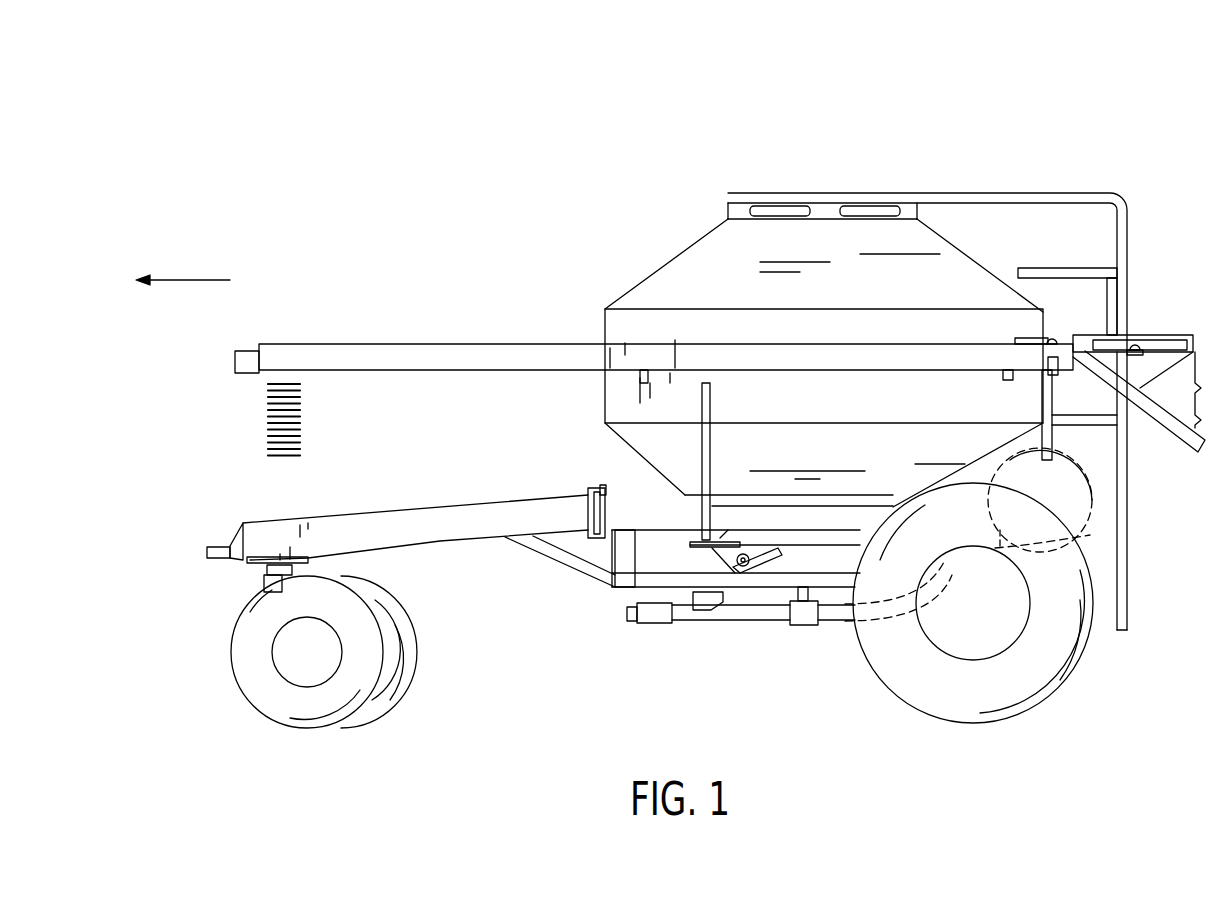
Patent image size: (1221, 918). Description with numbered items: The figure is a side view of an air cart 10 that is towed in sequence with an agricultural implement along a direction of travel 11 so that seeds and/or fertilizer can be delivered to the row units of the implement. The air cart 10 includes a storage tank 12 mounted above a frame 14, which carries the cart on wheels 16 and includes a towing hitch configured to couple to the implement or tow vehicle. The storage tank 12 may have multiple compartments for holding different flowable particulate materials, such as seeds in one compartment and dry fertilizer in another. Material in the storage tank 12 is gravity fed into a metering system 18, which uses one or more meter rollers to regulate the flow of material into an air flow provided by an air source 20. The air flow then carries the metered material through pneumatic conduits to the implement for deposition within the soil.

The air cart 10 is at (668, 150).
The direction of travel 11 is at (190, 280).
The storage tank 12 is at (705, 248).
The frame 14 is at (412, 510).
The wheels 16 is at (255, 710).
The metering system 18 is at (760, 560).
The air source 20 is at (1087, 472).